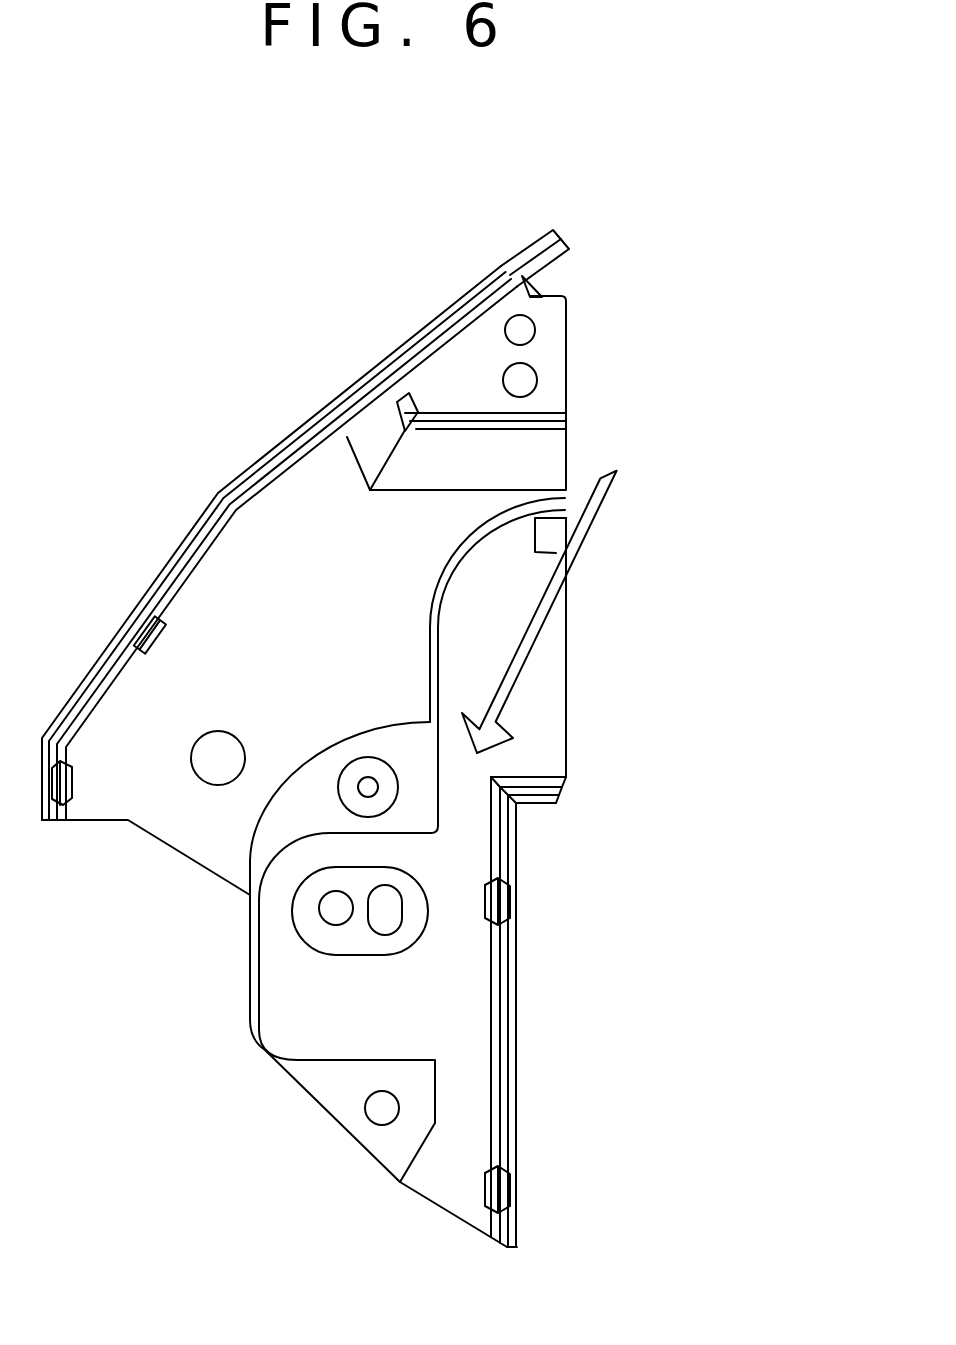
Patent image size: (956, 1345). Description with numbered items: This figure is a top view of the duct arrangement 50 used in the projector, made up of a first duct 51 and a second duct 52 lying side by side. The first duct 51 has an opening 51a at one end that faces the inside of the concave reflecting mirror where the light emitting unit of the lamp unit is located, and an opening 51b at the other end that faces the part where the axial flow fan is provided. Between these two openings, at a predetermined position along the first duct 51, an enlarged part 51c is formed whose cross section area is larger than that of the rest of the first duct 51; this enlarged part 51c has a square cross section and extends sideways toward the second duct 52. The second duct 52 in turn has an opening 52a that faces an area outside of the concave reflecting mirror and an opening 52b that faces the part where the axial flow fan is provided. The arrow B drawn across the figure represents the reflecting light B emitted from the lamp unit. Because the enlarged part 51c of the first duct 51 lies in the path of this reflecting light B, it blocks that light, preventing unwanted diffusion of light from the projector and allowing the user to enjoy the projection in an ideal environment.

The bracket assembly 50 is at (378, 308).
The first duct 51 is at (475, 818).
The opening 51a is at (537, 755).
The opening 51b is at (448, 1177).
The enlarged part 51c is at (313, 1022).
The second duct 52 is at (215, 572).
The opening 52a is at (533, 457).
The opening 52b is at (188, 827).
The reflecting light B is at (590, 538).